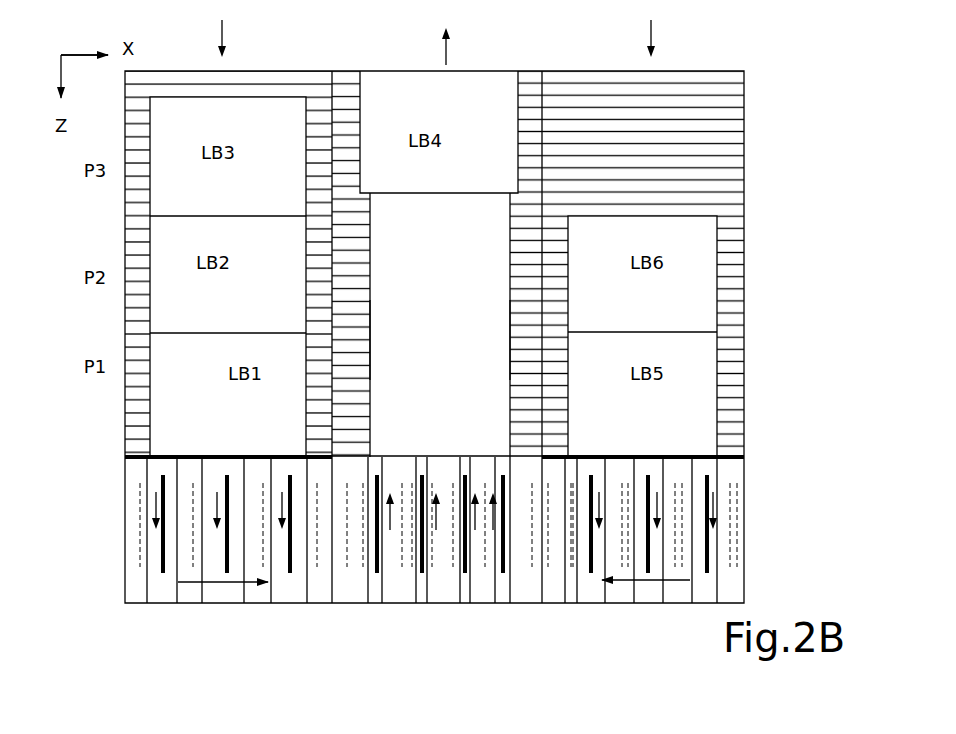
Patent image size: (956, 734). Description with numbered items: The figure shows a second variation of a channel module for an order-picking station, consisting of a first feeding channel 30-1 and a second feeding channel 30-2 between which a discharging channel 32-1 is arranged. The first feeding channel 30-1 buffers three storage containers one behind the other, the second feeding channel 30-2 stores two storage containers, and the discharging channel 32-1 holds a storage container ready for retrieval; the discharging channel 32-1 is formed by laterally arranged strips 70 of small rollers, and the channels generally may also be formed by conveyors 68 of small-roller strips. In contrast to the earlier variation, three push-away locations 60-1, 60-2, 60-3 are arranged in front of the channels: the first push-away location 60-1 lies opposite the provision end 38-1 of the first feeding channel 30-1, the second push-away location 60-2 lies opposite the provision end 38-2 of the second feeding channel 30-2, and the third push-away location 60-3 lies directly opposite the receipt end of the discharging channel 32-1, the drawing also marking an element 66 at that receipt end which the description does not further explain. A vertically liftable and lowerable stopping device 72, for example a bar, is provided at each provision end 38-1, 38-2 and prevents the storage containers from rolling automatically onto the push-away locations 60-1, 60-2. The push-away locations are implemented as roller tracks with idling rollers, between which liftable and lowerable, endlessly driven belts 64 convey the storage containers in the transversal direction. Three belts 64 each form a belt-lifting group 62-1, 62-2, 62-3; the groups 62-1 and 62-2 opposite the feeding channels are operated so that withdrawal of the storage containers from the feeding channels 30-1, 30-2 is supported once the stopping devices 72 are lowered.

The first feeding channel 30-1 is at (182, 60).
The discharging channel 32-1 is at (494, 64).
The second feeding channel 30-2 is at (717, 60).
The provision end of the first feeding channel 38-1 is at (132, 446).
The provision end of the second feeding channel 38-2 is at (742, 448).
The first push-away location 60-1 is at (194, 466).
The second push-away location 60-2 is at (619, 466).
The third push-away location 60-3 is at (405, 574).
The first belt-lifting group 62-1 is at (157, 618).
The second belt-lifting group 62-2 is at (570, 618).
The third belt-lifting group 62-3 is at (358, 618).
The belt 64 is at (710, 533).
The outlet opening 66 is at (421, 452).
The conveyor of small-roller strips 68 is at (392, 314).
The strip of small rollers 70 is at (370, 335).
The stopping device 72 is at (237, 454).